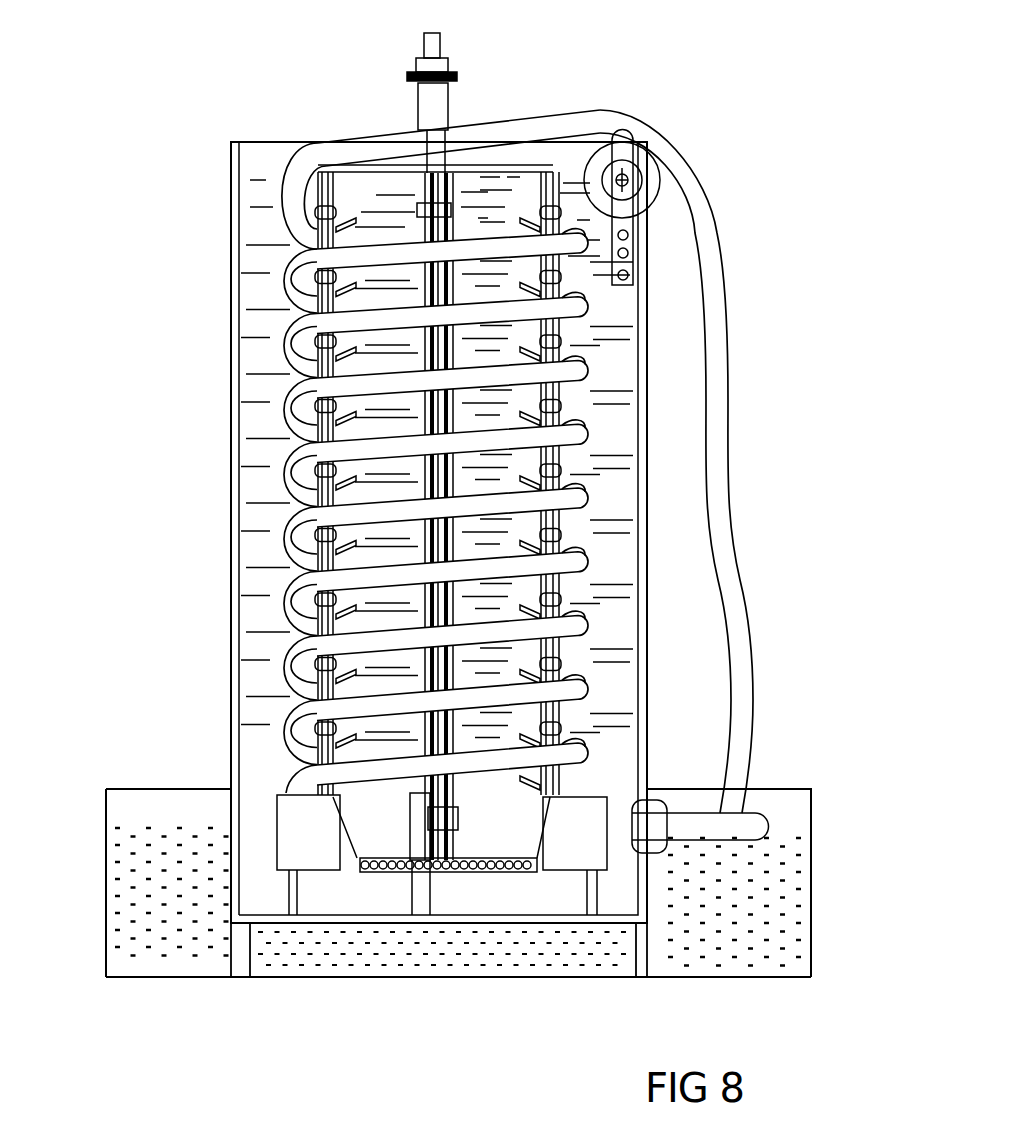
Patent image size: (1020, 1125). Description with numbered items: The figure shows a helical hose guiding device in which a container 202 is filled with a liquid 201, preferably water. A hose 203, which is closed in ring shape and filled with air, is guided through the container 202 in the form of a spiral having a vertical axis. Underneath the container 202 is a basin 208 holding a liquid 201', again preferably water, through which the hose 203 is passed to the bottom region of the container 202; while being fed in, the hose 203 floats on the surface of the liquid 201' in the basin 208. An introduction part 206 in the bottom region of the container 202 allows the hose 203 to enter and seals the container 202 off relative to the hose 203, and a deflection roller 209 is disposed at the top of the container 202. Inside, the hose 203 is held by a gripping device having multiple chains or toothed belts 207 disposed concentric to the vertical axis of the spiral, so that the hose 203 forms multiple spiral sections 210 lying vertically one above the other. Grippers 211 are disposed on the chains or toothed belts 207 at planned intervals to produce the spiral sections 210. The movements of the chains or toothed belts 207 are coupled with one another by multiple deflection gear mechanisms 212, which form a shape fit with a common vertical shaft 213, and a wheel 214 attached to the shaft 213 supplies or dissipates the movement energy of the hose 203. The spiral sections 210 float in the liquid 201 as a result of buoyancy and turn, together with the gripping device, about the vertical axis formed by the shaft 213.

The liquid 201 is at (388, 505).
The liquid 201' is at (458, 853).
The container 202 is at (237, 292).
The hose 203 is at (277, 357).
The introduction part 206 is at (670, 801).
The chains or toothed belts 207 is at (565, 432).
The basin 208 is at (104, 848).
The deflection roller 209 is at (649, 172).
The spiral sections 210 is at (497, 500).
The grippers 211 is at (545, 603).
The deflection gear mechanisms 212 is at (313, 847).
The shaft 213 is at (445, 120).
The wheel 214 is at (455, 75).